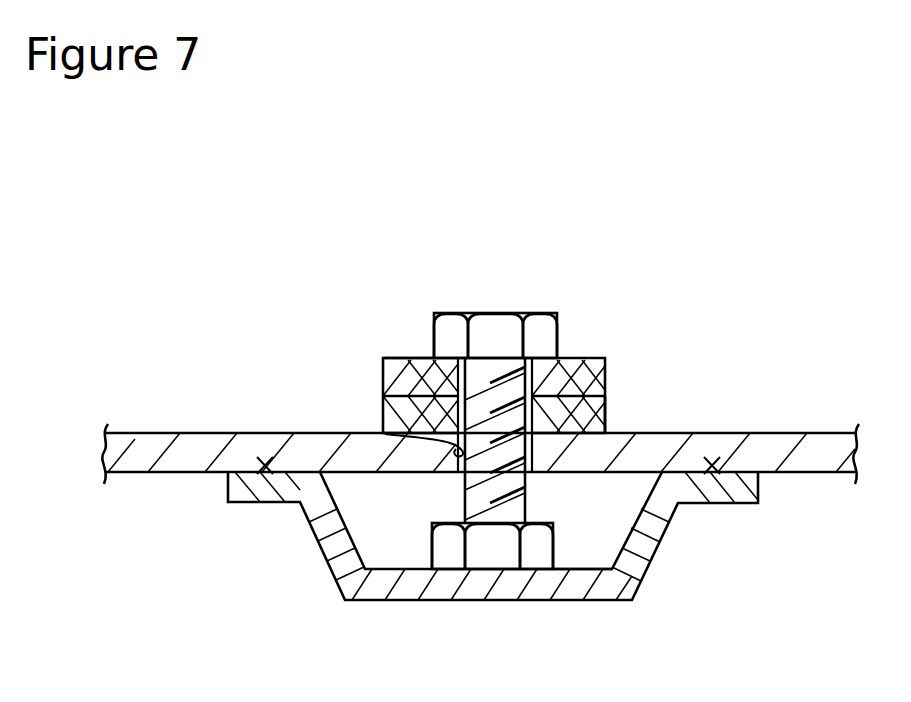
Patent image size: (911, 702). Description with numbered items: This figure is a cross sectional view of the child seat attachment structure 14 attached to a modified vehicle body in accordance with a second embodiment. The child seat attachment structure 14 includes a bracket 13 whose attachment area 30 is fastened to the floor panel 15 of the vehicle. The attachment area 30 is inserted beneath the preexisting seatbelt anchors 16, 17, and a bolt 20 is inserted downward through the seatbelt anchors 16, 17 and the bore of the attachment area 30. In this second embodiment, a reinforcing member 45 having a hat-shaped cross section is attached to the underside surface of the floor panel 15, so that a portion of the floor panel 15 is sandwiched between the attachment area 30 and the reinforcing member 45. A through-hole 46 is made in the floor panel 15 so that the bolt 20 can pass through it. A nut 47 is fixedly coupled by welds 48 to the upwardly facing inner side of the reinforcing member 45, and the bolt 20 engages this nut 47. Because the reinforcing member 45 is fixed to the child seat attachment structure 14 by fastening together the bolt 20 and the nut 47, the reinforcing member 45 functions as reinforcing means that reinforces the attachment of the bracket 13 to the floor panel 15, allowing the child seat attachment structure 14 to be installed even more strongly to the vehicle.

The child seat attachment structure 14 is at (357, 337).
The attachment area 30 is at (403, 358).
The bolt 20 is at (514, 313).
The seatbelt anchor 16 is at (605, 358).
The seatbelt anchor 17 is at (494, 414).
The bracket 13 is at (605, 412).
The floor panel 15 is at (812, 433).
The through-hole 46 is at (385, 434).
The reinforcing member 45 is at (650, 553).
The nut 47 is at (493, 558).
The weld 48 is at (568, 557).